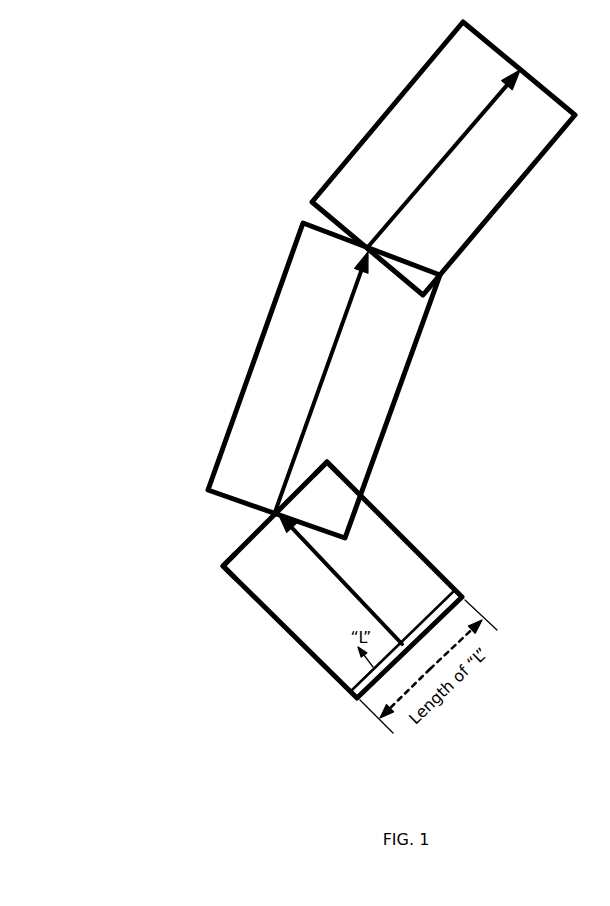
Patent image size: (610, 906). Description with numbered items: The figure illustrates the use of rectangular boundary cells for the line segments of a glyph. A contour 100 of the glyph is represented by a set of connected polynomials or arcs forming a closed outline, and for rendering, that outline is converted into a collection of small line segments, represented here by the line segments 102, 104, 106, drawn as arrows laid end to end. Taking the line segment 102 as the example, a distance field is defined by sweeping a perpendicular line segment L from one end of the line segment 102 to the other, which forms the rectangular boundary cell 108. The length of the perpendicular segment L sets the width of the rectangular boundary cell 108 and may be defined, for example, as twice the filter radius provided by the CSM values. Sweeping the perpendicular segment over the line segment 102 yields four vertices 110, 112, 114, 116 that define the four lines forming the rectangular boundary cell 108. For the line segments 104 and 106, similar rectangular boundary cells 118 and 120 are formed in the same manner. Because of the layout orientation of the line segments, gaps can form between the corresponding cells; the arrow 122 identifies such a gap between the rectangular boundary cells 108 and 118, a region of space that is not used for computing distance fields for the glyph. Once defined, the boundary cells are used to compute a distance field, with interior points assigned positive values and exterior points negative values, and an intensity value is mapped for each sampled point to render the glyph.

The contour 100 is at (205, 207).
The line segment 102 is at (357, 592).
The line segment 104 is at (335, 347).
The line segment 106 is at (465, 128).
The rectangular boundary cell 108 is at (280, 628).
The vertex 110 is at (464, 599).
The vertex 112 is at (355, 703).
The vertex 114 is at (223, 567).
The vertex 116 is at (328, 461).
The rectangular boundary cell 118 is at (238, 403).
The rectangular boundary cell 120 is at (368, 128).
The arrow 122 is at (203, 520).